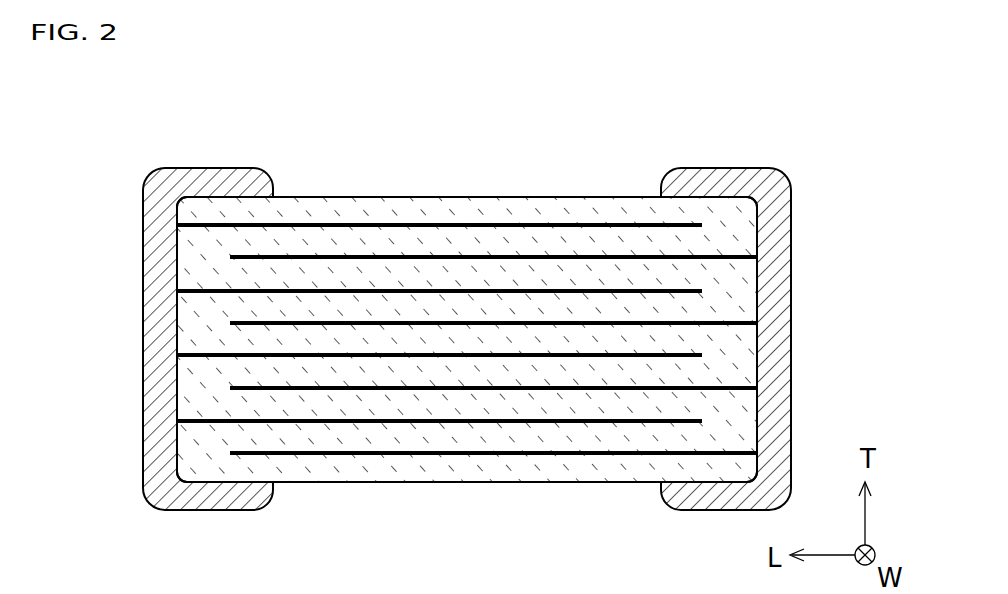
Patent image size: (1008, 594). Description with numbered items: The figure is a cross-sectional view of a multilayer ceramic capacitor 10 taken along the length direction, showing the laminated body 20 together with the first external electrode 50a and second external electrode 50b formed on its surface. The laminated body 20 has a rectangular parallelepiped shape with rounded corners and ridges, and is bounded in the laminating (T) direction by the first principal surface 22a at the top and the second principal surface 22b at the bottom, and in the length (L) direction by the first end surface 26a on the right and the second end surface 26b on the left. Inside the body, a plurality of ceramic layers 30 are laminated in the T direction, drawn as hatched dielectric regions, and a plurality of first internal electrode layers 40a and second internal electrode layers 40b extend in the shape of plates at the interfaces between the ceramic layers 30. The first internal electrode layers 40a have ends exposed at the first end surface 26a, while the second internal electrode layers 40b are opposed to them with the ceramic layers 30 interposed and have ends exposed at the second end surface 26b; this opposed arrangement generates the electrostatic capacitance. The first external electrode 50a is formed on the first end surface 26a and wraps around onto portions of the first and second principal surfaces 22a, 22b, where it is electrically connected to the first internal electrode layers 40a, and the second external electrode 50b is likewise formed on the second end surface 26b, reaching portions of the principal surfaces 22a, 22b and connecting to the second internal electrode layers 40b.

The multilayer ceramic capacitor 10 is at (268, 118).
The laminated body 20 is at (487, 194).
The first principal surface 22a is at (330, 197).
The second principal surface 22b is at (458, 482).
The first end surface 26a is at (757, 347).
The second end surface 26b is at (205, 357).
The ceramic layers 30 is at (455, 305).
The first internal electrode layers 40a is at (710, 320).
The second internal electrode layers 40b is at (227, 228).
The first external electrode 50a is at (796, 224).
The second external electrode 50b is at (139, 329).